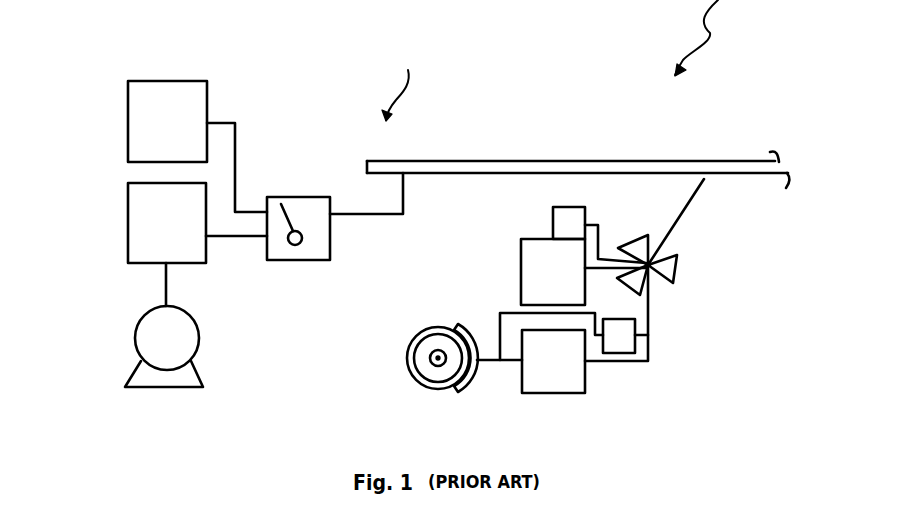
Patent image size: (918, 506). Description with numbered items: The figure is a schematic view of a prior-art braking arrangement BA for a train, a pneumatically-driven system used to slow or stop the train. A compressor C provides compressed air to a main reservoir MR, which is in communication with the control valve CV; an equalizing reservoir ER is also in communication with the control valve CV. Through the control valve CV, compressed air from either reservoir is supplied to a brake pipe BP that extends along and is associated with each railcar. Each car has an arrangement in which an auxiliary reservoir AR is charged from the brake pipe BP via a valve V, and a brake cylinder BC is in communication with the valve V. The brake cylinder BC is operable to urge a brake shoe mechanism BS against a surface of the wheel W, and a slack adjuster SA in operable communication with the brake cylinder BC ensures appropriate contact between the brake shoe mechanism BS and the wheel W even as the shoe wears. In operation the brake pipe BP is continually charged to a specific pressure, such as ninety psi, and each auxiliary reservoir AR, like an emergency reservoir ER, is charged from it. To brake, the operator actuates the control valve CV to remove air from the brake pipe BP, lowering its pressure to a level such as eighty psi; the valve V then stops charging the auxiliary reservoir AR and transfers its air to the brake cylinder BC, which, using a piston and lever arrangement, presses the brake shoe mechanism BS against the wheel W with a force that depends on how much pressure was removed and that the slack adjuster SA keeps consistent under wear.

The equalizing reservoir ER is at (662, 146).
The main reservoir MR is at (82, 203).
The compressor C is at (87, 288).
The control valve CV is at (330, 256).
The braking arrangement BA is at (531, 60).
The brake pipe BP is at (512, 161).
The auxiliary reservoir AR is at (457, 233).
The valve V is at (677, 265).
The slack adjuster SA is at (697, 323).
The brake cylinder BC is at (620, 398).
The brake shoe mechanism BS is at (470, 330).
The wheel W is at (410, 358).